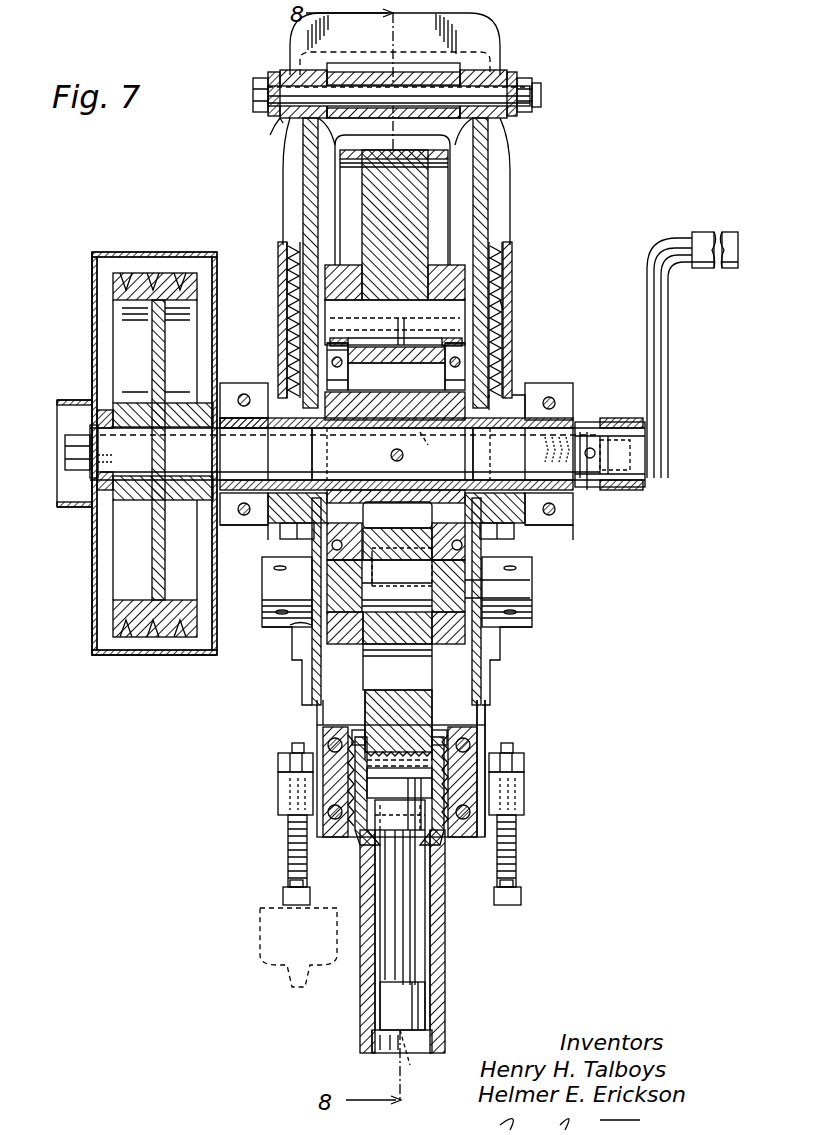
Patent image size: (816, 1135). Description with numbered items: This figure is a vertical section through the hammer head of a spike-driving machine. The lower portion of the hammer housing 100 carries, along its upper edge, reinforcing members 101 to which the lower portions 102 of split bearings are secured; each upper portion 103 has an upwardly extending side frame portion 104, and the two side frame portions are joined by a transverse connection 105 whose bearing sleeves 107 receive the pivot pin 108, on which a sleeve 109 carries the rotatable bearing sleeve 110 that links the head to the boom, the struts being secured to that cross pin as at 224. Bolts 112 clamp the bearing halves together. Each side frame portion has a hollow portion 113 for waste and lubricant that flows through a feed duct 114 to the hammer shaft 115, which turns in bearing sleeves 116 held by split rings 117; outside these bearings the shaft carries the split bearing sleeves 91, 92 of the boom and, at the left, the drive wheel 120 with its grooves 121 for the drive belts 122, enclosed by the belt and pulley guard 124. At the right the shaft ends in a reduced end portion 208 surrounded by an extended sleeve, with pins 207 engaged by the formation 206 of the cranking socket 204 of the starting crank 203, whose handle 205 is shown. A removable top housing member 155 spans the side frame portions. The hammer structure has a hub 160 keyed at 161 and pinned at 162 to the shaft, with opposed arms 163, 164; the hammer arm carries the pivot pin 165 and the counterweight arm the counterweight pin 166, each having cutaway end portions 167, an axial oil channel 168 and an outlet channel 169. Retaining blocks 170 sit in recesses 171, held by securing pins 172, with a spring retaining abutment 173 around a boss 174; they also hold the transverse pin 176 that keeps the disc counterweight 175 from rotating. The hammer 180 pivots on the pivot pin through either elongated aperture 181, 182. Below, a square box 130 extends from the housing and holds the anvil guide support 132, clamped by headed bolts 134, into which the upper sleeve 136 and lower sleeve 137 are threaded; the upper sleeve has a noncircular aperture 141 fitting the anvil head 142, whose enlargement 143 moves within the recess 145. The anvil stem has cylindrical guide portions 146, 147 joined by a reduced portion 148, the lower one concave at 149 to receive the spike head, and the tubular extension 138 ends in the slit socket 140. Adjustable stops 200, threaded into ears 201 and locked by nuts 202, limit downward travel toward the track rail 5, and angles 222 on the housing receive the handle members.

The track rail 5 is at (257, 932).
The split bearing sleeve 91 is at (568, 384).
The split bearing sleeve 92 is at (232, 383).
The lower portion of hammer housing 100 is at (492, 660).
The reinforcing member 101 is at (290, 522).
The lower portion of split bearing 102 is at (245, 525).
The upper portion of split bearing 103 is at (514, 400).
The side frame portion 104 is at (283, 205).
The transverse connection 105 is at (478, 24).
The bearing sleeve 107 is at (283, 72).
The pivot pin 108 is at (253, 96).
The sleeve 109 is at (272, 130).
The bearing sleeve 110 is at (360, 72).
The bolt 112 is at (284, 530).
The hollow portion 113 is at (280, 282).
The feed duct 114 is at (493, 395).
The hammer shaft 115 is at (367, 454).
The bearing sleeve 116 is at (243, 428).
The split ring 117 is at (312, 425).
The drive wheel 120 is at (130, 500).
The belt receiving groove 121 is at (144, 600).
The drive belt 122 is at (180, 637).
The belt and pulley guard 124 is at (95, 645).
The square box 130 is at (317, 722).
The anvil guide support 132 is at (485, 725).
The headed bolt 134 is at (328, 745).
The upper screw threaded sleeve 136 is at (348, 770).
The lower screw threaded sleeve 137 is at (365, 840).
The tubular downward extension 138 is at (440, 938).
The slit bottom extension 140 is at (383, 1053).
The noncircular aperture 141 is at (357, 730).
The anvil head 142 is at (440, 730).
The anvil enlargement 143 is at (399, 795).
The recess 145 is at (438, 832).
The cylindrical guide portion 146 is at (386, 840).
The cylindrical guide portion 147 is at (415, 1002).
The reduced portion 148 is at (412, 898).
The concave face 149 is at (420, 1057).
The top housing member 155 is at (450, 155).
The hub 160 is at (405, 492).
The key 161 is at (438, 445).
The securing pin 162 is at (397, 446).
The hammer arm 163 is at (340, 628).
The counterweight arm 164 is at (290, 248).
The pivot pin 165 is at (518, 595).
The counterweight pin 166 is at (395, 322).
The cutaway end portion 167 is at (338, 338).
The axial oil channel 168 is at (405, 330).
The outlet channel 169 is at (396, 338).
The retaining block 170 is at (330, 360).
The recess 171 is at (327, 385).
The securing pin 172 is at (327, 362).
The spring retaining abutment 173 is at (327, 345).
The boss 174 is at (513, 304).
The counterweight 175 is at (410, 200).
The transverse pin 176 is at (396, 368).
The hammer 180 is at (432, 710).
The elongated aperture 181 is at (400, 648).
The elongated aperture 182 is at (365, 700).
The adjustable stop 200 is at (288, 847).
The ear 201 is at (278, 795).
The nut 202 is at (278, 760).
The crank 203 is at (670, 355).
The cranking socket 204 is at (645, 449).
The handle 205 is at (730, 232).
The socket formation 206 is at (587, 490).
The pin 207 is at (620, 451).
The reduced end portion 208 is at (590, 448).
The angle 222 is at (262, 610).
The strut securing point 224 is at (268, 78).